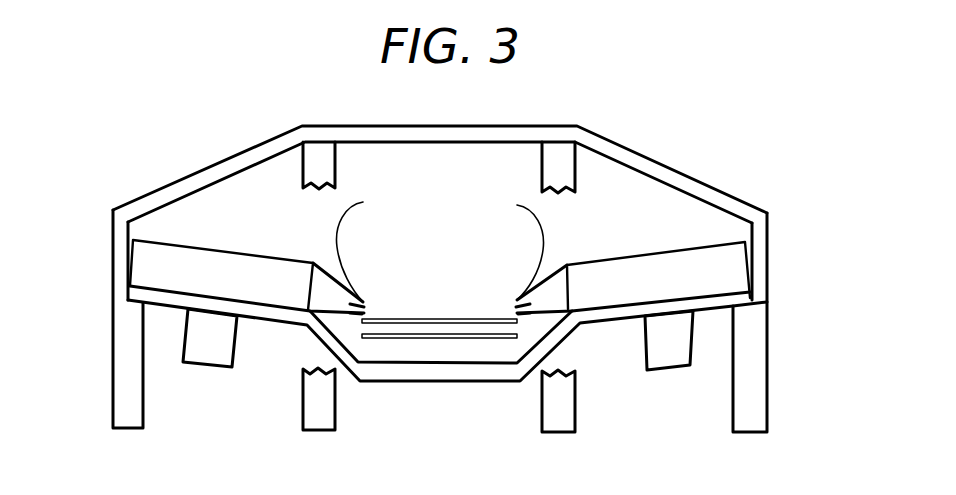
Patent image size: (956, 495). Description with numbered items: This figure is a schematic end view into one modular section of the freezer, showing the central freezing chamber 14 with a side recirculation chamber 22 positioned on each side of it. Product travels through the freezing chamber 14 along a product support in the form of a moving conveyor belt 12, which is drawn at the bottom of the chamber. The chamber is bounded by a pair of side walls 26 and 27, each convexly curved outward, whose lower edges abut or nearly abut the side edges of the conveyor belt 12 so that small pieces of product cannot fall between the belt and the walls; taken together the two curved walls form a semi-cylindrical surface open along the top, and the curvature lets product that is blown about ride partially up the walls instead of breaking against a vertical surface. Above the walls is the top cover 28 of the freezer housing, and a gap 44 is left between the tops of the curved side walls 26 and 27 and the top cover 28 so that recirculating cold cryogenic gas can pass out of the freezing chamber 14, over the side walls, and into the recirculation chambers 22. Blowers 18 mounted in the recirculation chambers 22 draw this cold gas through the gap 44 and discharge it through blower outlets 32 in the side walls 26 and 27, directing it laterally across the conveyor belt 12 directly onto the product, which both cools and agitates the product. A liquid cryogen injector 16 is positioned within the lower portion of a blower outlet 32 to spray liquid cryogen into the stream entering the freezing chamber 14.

The conveyor belt 12 is at (423, 325).
The freezing chamber 14 is at (450, 240).
The liquid cryogen injector 16 is at (352, 315).
The blower 18 is at (142, 270).
The recirculation chamber 22 is at (640, 222).
The side wall 26 is at (536, 222).
The side wall 27 is at (363, 202).
The top cover 28 is at (273, 136).
The blower outlet 32 is at (537, 305).
The gap 44 is at (532, 198).